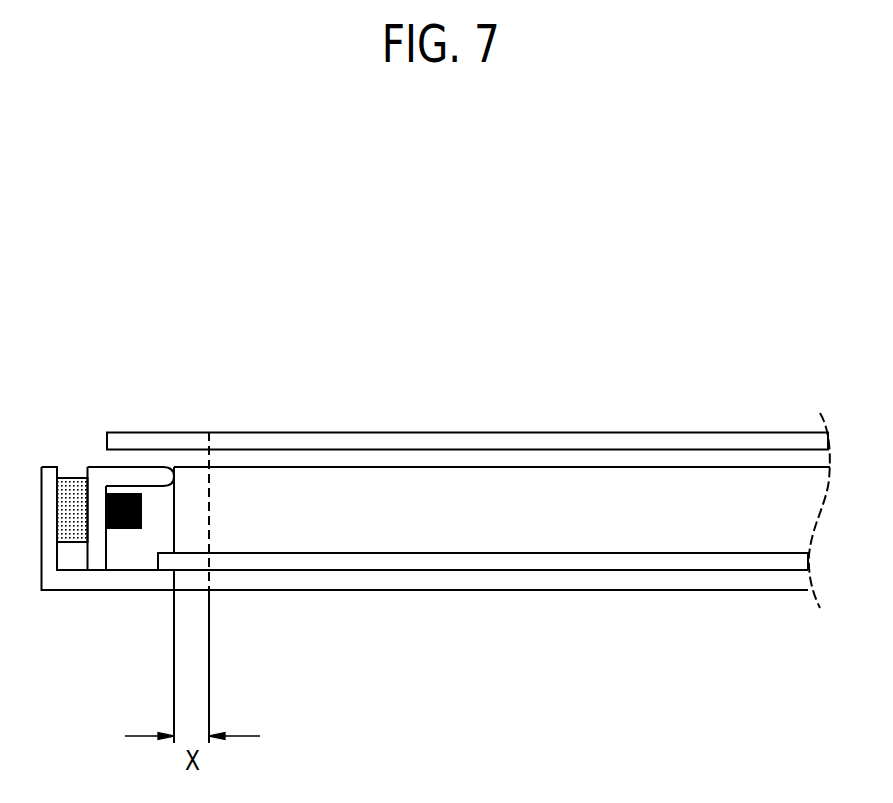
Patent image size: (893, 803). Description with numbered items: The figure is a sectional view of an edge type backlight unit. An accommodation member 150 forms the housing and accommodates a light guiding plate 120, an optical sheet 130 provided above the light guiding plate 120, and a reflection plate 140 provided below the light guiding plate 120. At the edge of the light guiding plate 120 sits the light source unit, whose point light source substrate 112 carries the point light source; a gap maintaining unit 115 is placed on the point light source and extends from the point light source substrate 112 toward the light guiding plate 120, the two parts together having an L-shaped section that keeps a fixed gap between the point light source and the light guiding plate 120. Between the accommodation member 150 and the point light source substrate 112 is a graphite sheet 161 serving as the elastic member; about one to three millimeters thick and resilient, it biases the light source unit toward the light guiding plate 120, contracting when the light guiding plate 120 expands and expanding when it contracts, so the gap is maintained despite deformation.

The point light source substrate 112 is at (94, 517).
The gap maintaining unit 115 is at (135, 475).
The light guiding plate 120 is at (428, 532).
The optical sheet 130 is at (487, 435).
The reflection plate 140 is at (587, 563).
The accommodation member 150 is at (257, 580).
The graphite sheet 161 is at (73, 543).